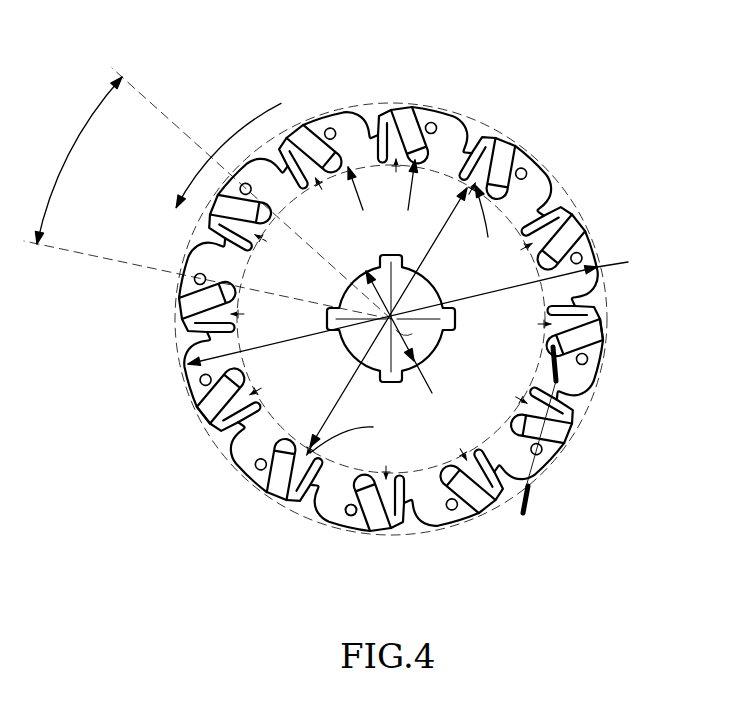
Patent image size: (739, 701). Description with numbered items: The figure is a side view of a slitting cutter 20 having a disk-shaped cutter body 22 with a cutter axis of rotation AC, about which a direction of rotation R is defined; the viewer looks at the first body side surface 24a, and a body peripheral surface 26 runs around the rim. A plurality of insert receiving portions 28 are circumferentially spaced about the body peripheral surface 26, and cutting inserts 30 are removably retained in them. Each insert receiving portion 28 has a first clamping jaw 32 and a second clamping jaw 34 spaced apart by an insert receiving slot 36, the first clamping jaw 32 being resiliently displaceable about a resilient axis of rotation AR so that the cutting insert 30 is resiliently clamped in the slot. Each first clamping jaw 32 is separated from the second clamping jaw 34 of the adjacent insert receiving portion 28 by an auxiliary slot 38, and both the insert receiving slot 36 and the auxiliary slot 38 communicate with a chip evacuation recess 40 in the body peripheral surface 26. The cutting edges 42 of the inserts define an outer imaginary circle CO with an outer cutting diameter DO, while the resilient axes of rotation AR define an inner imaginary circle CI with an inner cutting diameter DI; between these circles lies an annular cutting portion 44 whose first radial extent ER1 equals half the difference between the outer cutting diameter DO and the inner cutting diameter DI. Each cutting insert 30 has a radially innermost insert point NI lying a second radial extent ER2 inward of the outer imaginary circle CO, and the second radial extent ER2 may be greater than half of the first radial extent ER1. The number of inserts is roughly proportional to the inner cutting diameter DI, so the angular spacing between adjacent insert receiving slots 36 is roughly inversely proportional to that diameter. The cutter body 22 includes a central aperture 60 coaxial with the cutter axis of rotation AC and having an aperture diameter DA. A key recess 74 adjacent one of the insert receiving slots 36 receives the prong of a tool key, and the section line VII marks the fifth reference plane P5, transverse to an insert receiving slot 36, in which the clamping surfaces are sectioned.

The slitting cutter 20 is at (202, 125).
The cutter body 22 is at (262, 332).
The first body side surface 24a is at (312, 292).
The body peripheral surface 26 is at (194, 241).
The insert receiving portion 28 is at (436, 495).
The cutting insert 30 is at (602, 326).
The first clamping jaw 32 is at (554, 220).
The second clamping jaw 34 is at (588, 247).
The insert receiving slot 36 is at (360, 485).
The auxiliary slot 38 is at (404, 500).
The chip evacuation recess 40 is at (480, 133).
The cutting edge 42 is at (601, 323).
The annular cutting portion 44 is at (290, 194).
The central aperture 60 is at (380, 348).
The key recess 74 is at (349, 514).
The outer imaginary circle CO is at (210, 443).
The inner imaginary circle CI is at (246, 470).
The direction of rotation R is at (238, 146).
The radially innermost insert point NI is at (416, 106).
The cutter axis of rotation AC is at (389, 317).
The aperture diameter DA is at (413, 348).
The inner cutting diameter DI is at (388, 317).
The outer cutting diameter DO is at (428, 307).
The resilient axis of rotation AR is at (414, 319).
The first radial extent ER1 is at (330, 108).
The second radial extent ER2 is at (420, 102).
The section line VII- VII is at (531, 498).
The fifth reference plane P5 is at (522, 523).